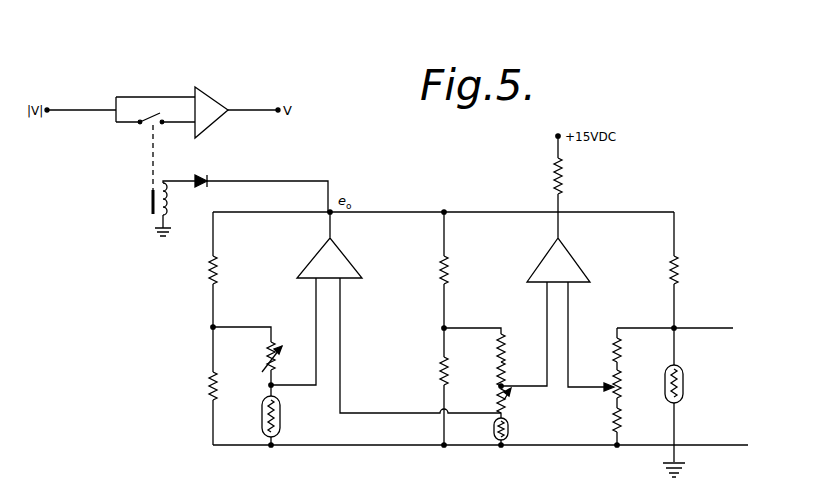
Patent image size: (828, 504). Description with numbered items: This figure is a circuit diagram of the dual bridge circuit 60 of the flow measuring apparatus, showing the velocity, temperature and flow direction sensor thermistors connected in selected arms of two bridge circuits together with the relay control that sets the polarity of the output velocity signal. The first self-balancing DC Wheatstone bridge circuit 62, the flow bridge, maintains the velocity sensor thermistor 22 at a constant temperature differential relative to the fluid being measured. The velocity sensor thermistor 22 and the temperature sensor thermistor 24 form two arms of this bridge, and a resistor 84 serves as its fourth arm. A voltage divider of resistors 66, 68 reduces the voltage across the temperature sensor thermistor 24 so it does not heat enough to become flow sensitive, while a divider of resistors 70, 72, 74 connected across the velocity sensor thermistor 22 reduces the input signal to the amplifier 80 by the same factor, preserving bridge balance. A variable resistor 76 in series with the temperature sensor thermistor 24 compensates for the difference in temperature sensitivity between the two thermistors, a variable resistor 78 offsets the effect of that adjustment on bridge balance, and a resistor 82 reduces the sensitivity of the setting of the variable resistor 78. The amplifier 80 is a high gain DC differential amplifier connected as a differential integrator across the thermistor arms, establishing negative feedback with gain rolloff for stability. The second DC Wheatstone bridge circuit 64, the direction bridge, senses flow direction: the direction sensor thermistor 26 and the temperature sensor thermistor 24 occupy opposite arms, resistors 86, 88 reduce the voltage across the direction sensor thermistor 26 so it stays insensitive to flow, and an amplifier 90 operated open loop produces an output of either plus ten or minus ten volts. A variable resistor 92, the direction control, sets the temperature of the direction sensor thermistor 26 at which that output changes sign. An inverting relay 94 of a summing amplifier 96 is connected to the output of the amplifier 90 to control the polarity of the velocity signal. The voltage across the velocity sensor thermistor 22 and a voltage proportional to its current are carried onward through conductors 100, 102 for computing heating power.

The summing amplifier 96 is at (222, 96).
The inverting relay 94 is at (150, 210).
The first self-balancing DC Wheatstone bridge circuit 62 is at (655, 211).
The resistor 86 is at (207, 270).
The resistor 88 is at (206, 386).
The second DC Wheatstone bridge circuit 64 is at (212, 313).
The amplifier 90 is at (318, 257).
The variable resistor 92 is at (288, 369).
The direction sensor thermistor 26 is at (262, 408).
The dual bridge circuit 60 is at (245, 450).
The conductor 102 is at (720, 446).
The resistor 66 is at (441, 263).
The resistor 68 is at (441, 366).
The resistor 82 is at (498, 345).
The variable resistor 78 is at (522, 384).
The variable resistor 76 is at (497, 396).
The temperature sensor thermistor 24 is at (494, 427).
The amplifier 80 is at (574, 262).
The resistor 70 is at (612, 346).
The resistor 72 is at (613, 377).
The resistor 74 is at (613, 424).
The conductor 100 is at (713, 327).
The resistor 84 is at (680, 268).
The velocity sensor thermistor 22 is at (683, 374).